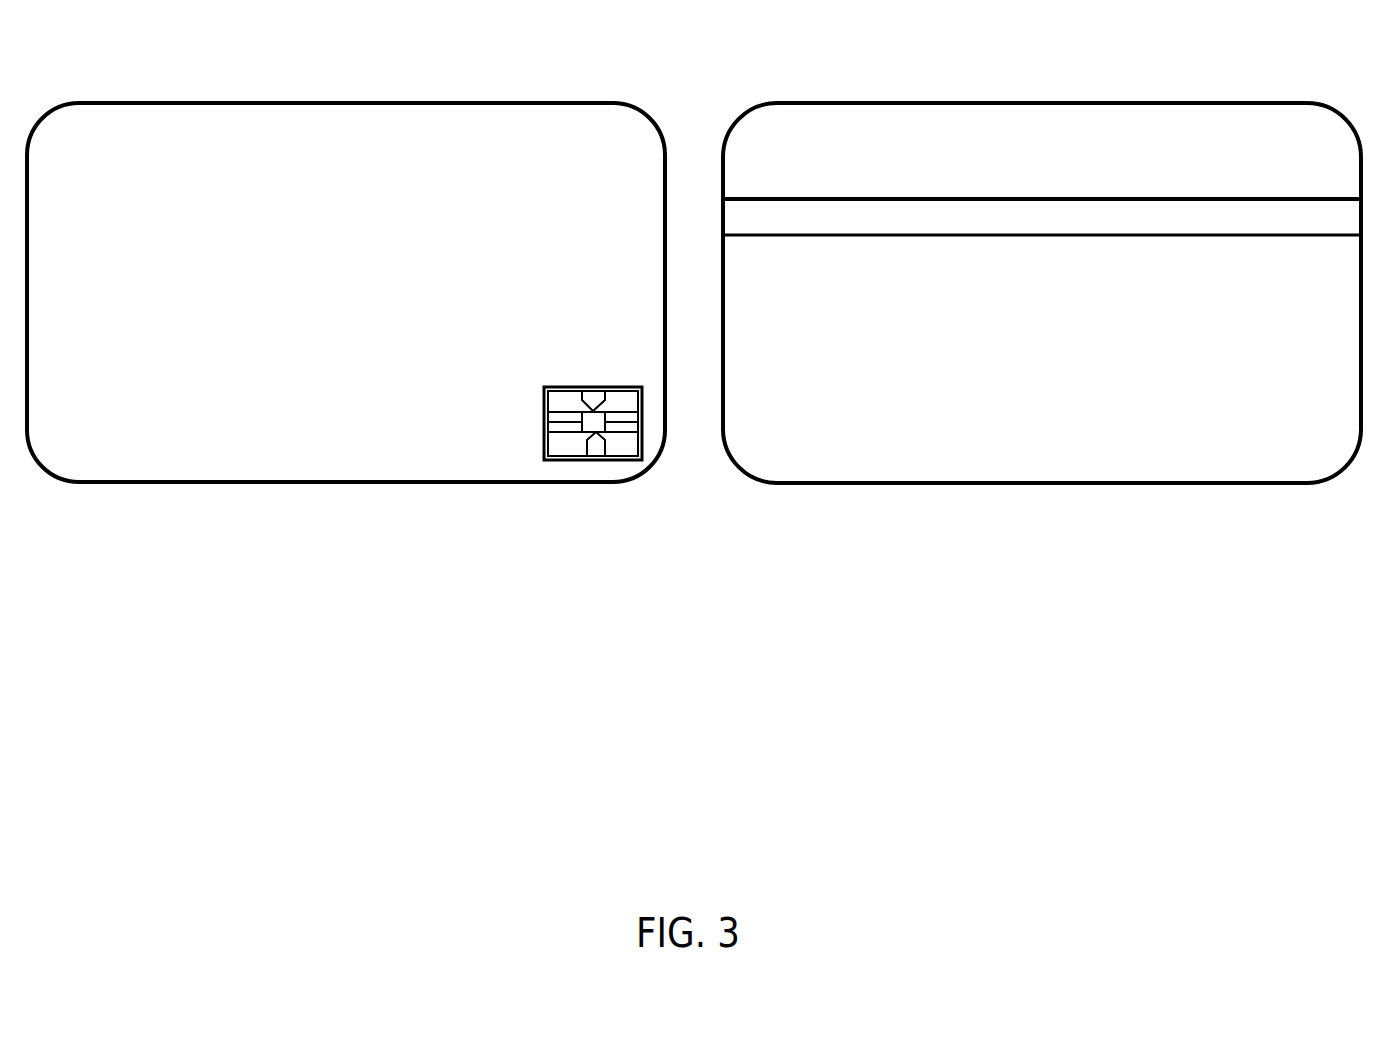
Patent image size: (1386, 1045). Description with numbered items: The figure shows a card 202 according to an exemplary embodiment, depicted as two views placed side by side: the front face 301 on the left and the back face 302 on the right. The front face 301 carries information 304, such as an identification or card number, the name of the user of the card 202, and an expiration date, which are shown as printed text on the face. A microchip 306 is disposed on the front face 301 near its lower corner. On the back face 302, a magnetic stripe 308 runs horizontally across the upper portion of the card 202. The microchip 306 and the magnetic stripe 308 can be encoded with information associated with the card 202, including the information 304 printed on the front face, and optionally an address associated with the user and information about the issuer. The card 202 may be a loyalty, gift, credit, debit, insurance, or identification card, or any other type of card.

The card 202 is at (345, 482).
The front face 301 is at (286, 432).
The back face 302 is at (899, 455).
The information 304 is at (446, 353).
The microchip 306 is at (596, 460).
The magnetic stripe 308 is at (746, 218).